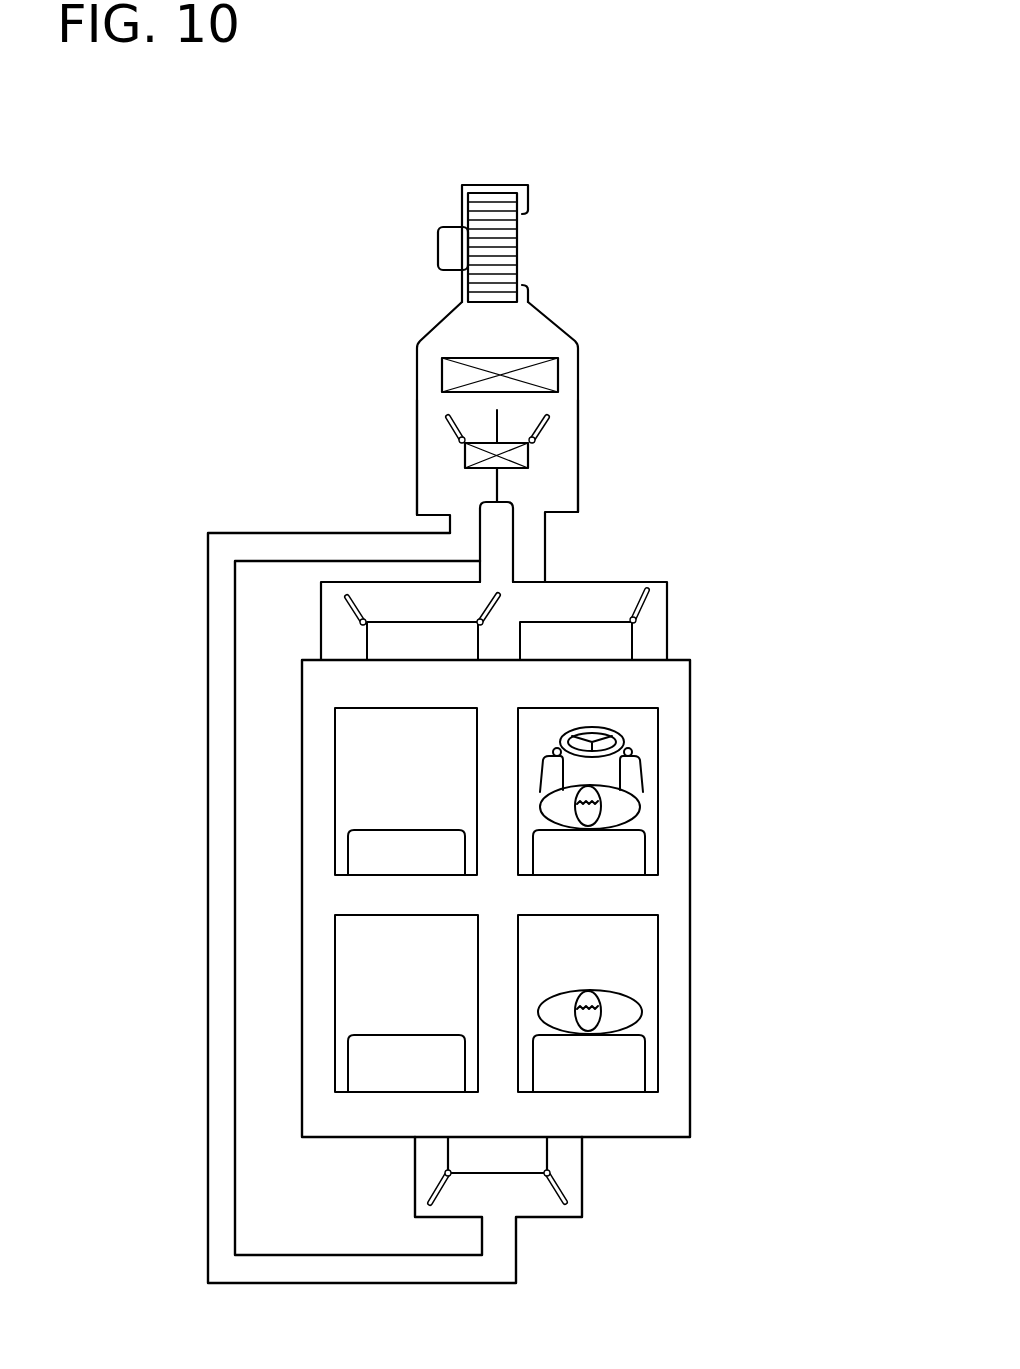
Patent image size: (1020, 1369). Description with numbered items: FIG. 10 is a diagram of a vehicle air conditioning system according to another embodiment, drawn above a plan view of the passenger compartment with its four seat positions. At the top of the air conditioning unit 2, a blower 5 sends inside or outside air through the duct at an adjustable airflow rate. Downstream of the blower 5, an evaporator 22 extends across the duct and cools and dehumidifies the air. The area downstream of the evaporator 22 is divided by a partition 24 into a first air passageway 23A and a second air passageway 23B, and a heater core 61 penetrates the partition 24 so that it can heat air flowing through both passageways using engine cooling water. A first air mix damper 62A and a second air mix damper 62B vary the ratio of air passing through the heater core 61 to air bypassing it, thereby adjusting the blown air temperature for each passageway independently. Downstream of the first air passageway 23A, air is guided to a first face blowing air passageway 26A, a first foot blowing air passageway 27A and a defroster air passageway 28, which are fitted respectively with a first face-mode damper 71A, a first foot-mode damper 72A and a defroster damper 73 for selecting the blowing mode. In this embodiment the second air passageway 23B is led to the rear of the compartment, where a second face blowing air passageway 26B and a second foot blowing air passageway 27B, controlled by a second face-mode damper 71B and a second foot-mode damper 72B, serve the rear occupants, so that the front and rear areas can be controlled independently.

The air conditioning unit 2 is at (573, 290).
The blower 5 is at (427, 248).
The evaporator 22 is at (550, 373).
The first air passageway 23A is at (567, 492).
The second air passageway 23B is at (443, 465).
The partition 24 is at (505, 483).
The first face blowing air passageway 26A is at (658, 640).
The second face blowing air passageway 26B is at (568, 1165).
The first foot blowing air passageway 27A is at (338, 643).
The second foot blowing air passageway 27B is at (425, 1162).
The defroster air passageway 28 is at (503, 632).
The heater core 61 is at (475, 457).
The first air mix damper 62A is at (547, 428).
The second air mix damper 62B is at (460, 438).
The first face-mode damper 71A is at (645, 607).
The second face-mode damper 71B is at (572, 1192).
The first foot-mode damper 72A is at (357, 612).
The second foot-mode damper 72B is at (438, 1188).
The defroster damper 73 is at (498, 600).